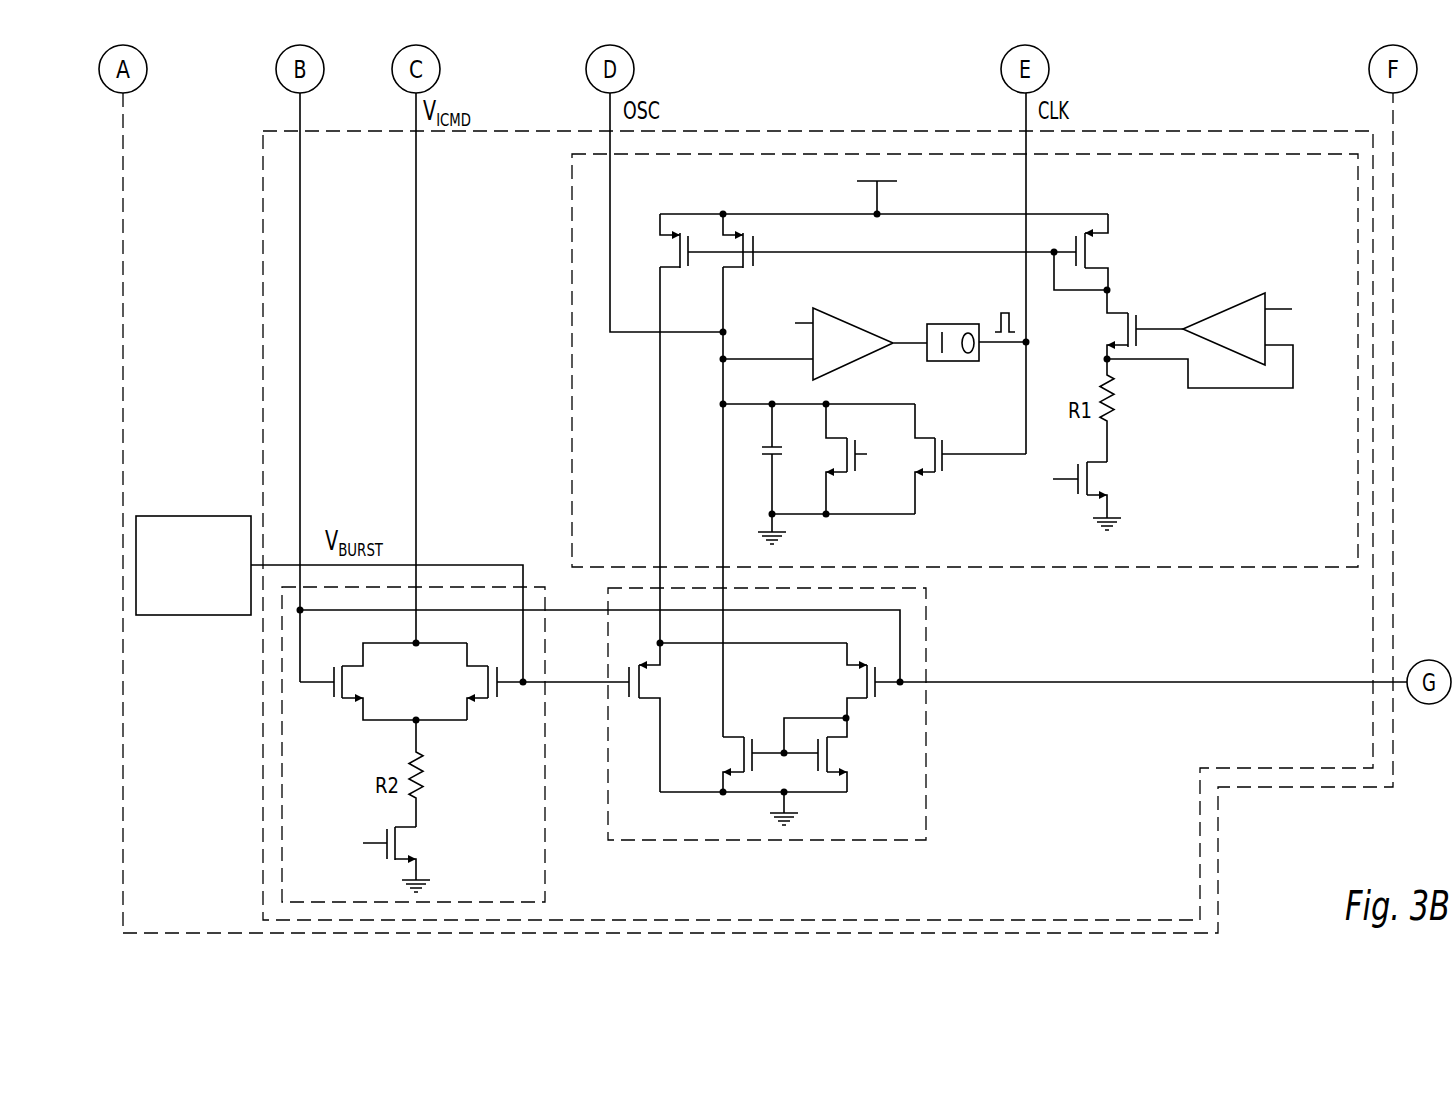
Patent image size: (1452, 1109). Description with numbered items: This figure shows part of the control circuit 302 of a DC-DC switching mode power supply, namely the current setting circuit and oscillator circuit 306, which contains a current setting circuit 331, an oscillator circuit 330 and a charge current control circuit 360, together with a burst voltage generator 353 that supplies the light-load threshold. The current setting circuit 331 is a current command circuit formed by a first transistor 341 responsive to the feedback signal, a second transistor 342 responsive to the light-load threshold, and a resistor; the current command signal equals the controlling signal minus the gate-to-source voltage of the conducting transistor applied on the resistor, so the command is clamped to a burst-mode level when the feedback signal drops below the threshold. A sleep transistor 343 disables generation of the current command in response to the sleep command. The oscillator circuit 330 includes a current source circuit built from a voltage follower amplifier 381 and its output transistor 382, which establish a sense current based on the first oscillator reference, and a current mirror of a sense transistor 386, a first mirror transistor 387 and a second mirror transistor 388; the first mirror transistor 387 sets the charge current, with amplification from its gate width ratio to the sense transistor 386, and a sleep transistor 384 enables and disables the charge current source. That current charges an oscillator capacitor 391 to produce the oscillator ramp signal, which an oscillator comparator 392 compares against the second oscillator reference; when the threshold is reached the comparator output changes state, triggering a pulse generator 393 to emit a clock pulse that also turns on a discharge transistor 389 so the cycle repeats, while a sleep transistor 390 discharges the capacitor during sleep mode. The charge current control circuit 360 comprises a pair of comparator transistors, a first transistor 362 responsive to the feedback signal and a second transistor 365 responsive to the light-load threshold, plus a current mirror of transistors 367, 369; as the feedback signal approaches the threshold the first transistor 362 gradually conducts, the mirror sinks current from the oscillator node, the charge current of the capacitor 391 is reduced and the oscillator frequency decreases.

The control circuit 302 is at (124, 257).
The current setting circuit and oscillator circuit 306 is at (839, 131).
The oscillator circuit 330 is at (569, 205).
The current setting circuit 331 is at (545, 780).
The first transistor 341 is at (344, 680).
The second transistor 342 is at (484, 682).
The sleep transistor 343 is at (397, 845).
The burst voltage generator 353 is at (197, 516).
The charge current control circuit 360 is at (928, 722).
The first transistor of the pair of comparator transistors 362 is at (863, 682).
The second transistor of the pair of comparator transistors 365 is at (641, 680).
The current mirror transistor 367 is at (831, 755).
The current mirror transistor 369 is at (739, 755).
The voltage follower amplifier 381 is at (1221, 311).
The output transistor 382 is at (1125, 332).
The sleep transistor 384 is at (1090, 486).
The sense transistor 386 is at (1088, 258).
The first mirror transistor 387 is at (753, 268).
The second mirror transistor 388 is at (674, 258).
The discharge transistor 389 is at (945, 472).
The sleep transistor 390 is at (858, 471).
The oscillator capacitor 391 is at (782, 452).
The oscillator comparator 392 is at (855, 362).
The pulse generator 393 is at (957, 324).